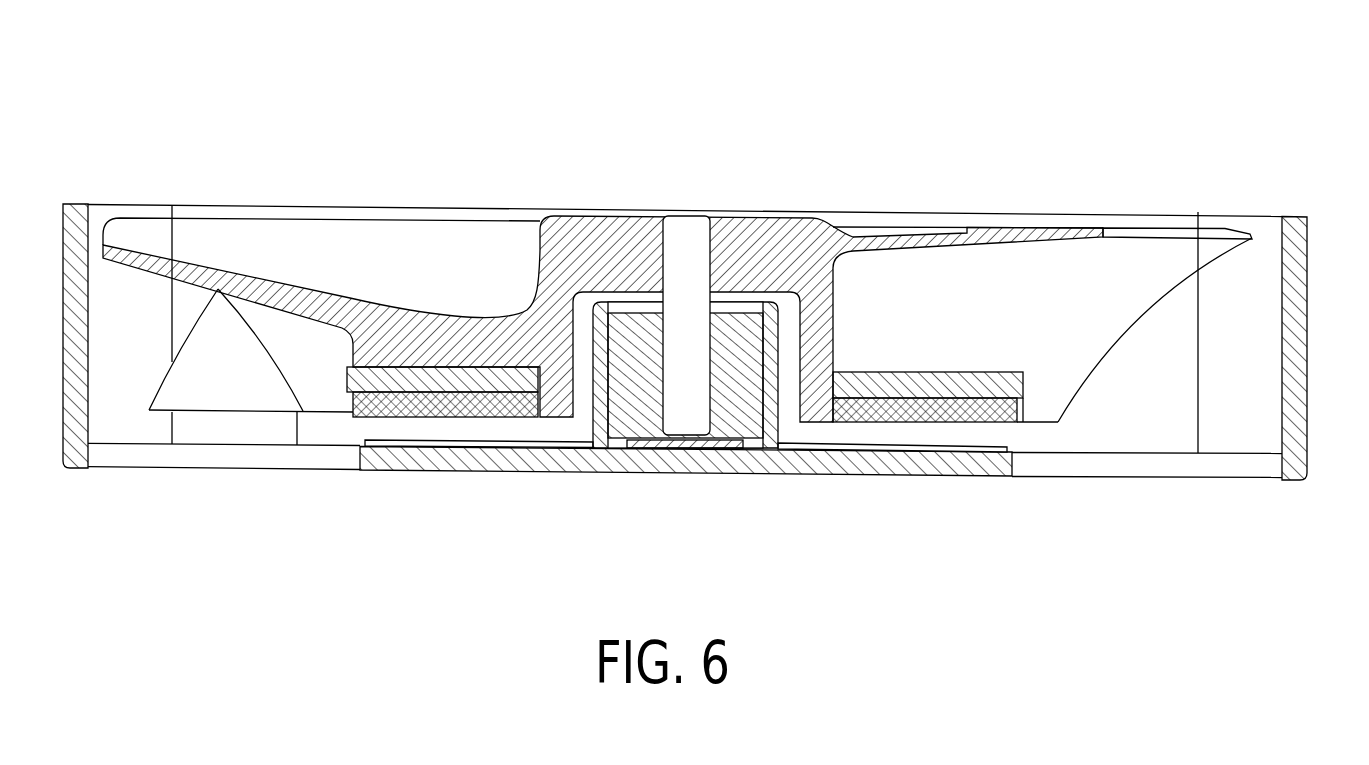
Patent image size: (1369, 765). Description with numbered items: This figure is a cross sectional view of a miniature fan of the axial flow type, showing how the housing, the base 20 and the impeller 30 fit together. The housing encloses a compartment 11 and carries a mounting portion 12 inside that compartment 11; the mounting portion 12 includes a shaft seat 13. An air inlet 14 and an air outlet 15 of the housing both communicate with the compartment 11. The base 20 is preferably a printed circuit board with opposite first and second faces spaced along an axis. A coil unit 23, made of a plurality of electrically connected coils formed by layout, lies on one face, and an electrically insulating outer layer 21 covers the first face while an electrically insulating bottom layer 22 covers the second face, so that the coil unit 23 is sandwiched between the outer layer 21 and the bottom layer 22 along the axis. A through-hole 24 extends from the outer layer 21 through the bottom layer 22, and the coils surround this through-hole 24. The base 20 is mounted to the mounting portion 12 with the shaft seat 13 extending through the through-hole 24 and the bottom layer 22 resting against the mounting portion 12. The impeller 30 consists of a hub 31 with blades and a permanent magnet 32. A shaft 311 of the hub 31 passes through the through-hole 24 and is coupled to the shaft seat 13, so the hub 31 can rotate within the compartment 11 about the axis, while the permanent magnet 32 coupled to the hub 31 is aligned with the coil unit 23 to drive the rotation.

The compartment 11 is at (1265, 237).
The mounting portion 12 is at (917, 467).
The shaft seat 13 is at (597, 425).
The air inlet 14 is at (1282, 217).
The air outlet 15 is at (1273, 485).
The base 20 is at (879, 459).
The electrically insulating outer layer 21 is at (994, 445).
The bottom layer 22 is at (997, 450).
The coil unit 23 is at (962, 452).
The through-hole 24 is at (793, 450).
The impeller 30 is at (861, 205).
The hub 31 is at (780, 217).
The shaft 311 is at (689, 420).
The permanent magnet 32 is at (1023, 425).